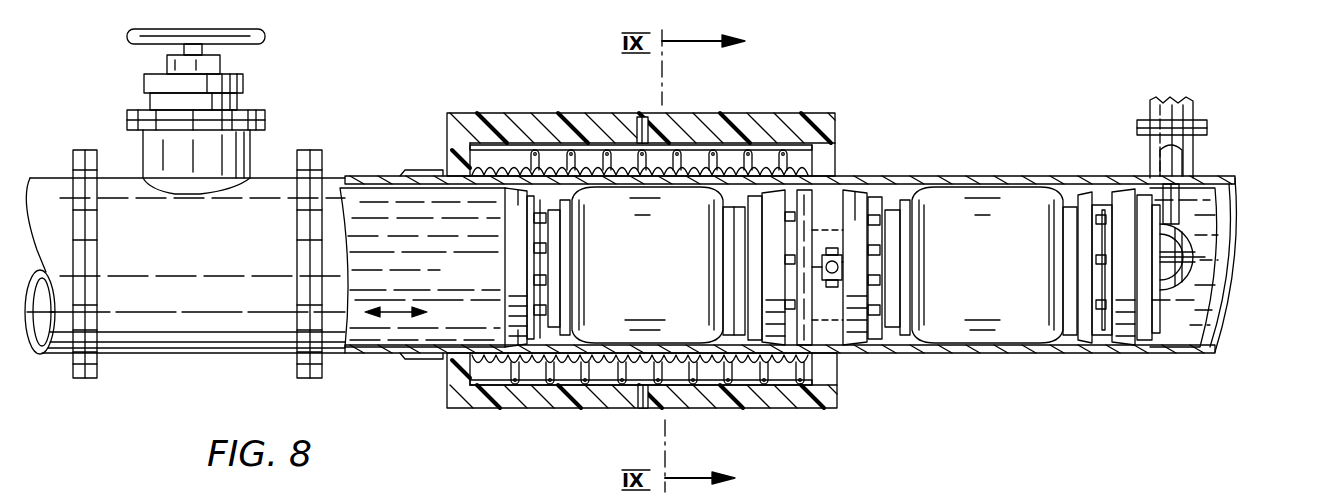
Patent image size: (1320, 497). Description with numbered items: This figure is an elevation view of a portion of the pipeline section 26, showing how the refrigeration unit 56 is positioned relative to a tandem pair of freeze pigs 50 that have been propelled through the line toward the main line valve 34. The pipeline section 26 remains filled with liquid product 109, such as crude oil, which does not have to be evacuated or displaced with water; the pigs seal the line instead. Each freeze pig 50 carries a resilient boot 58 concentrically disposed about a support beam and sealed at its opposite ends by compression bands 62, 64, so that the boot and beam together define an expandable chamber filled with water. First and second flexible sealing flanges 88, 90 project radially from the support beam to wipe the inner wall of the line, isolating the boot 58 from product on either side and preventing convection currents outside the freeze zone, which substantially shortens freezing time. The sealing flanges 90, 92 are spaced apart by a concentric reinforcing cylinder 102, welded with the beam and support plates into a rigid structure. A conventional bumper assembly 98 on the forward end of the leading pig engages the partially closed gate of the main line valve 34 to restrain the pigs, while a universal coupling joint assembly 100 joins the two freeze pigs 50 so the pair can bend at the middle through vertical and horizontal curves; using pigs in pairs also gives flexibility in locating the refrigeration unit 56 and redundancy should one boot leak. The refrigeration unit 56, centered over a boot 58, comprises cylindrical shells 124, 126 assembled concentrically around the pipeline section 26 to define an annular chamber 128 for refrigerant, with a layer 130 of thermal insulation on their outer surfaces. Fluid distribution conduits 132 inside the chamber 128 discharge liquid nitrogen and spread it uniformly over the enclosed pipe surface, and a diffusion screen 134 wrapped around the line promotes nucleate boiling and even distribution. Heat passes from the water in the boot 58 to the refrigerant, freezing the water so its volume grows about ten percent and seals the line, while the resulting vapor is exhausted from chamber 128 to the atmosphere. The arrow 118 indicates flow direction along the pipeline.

The pipeline section 26 is at (922, 176).
The main line valve 34 is at (298, 118).
The freeze pig 50 is at (475, 277).
The refrigeration unit 56 is at (790, 197).
The resilient boot 58 is at (625, 327).
The compression band 62 is at (718, 281).
The compression band 64 is at (557, 265).
The first flexible sealing flange 88 is at (510, 293).
The second flexible sealing flange 90 is at (735, 232).
The sealing flange 92 is at (800, 232).
The bumper assembly 98 is at (1204, 248).
The universal coupling joint assembly 100 is at (835, 286).
The reinforcing cylinder 102 is at (1113, 224).
The liquid product 109 is at (372, 198).
The flow direction arrow 118 is at (395, 316).
The cylindrical shell 124 is at (778, 142).
The cylindrical shell 126 is at (743, 384).
The annular chamber 128 is at (537, 377).
The layer of thermal insulation 130 is at (525, 117).
The fluid distribution conduit 132 is at (587, 372).
The diffusion screen 134 is at (497, 357).